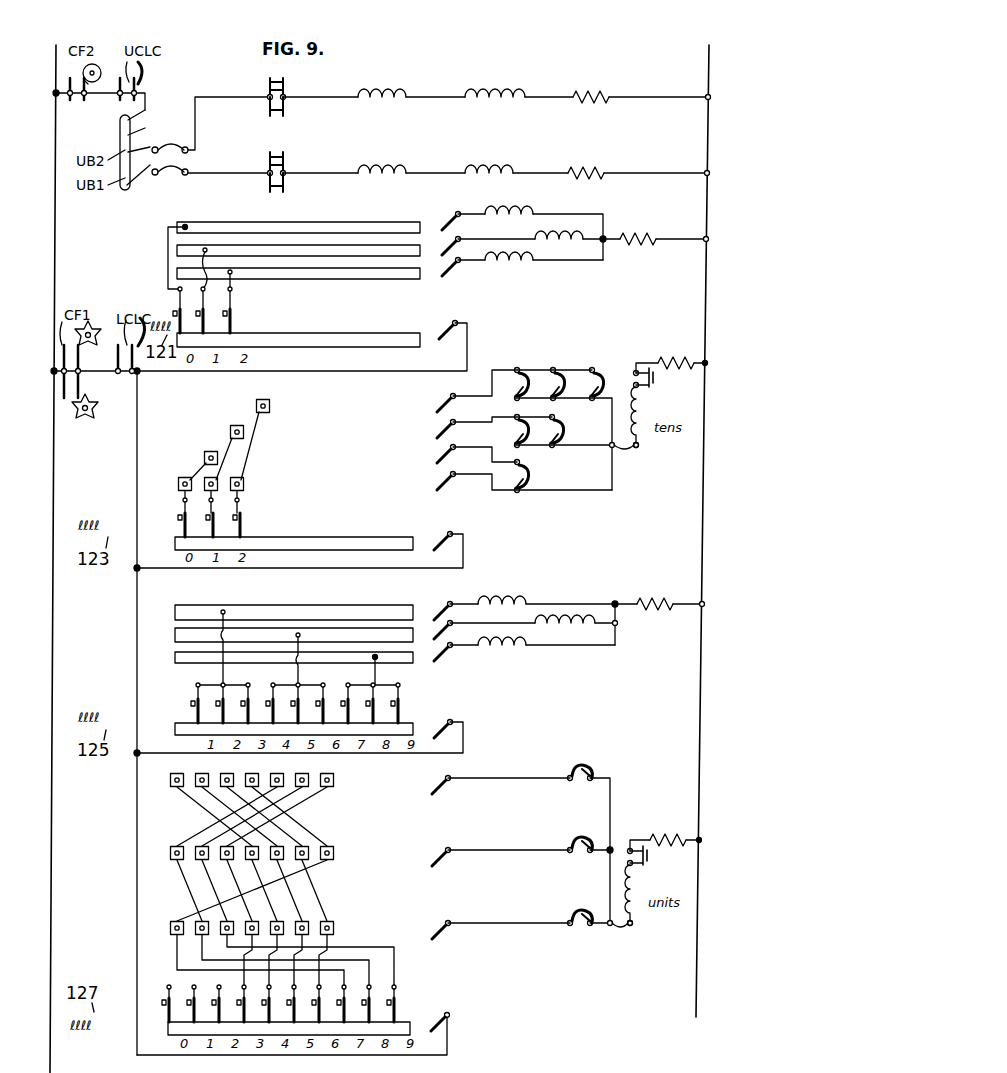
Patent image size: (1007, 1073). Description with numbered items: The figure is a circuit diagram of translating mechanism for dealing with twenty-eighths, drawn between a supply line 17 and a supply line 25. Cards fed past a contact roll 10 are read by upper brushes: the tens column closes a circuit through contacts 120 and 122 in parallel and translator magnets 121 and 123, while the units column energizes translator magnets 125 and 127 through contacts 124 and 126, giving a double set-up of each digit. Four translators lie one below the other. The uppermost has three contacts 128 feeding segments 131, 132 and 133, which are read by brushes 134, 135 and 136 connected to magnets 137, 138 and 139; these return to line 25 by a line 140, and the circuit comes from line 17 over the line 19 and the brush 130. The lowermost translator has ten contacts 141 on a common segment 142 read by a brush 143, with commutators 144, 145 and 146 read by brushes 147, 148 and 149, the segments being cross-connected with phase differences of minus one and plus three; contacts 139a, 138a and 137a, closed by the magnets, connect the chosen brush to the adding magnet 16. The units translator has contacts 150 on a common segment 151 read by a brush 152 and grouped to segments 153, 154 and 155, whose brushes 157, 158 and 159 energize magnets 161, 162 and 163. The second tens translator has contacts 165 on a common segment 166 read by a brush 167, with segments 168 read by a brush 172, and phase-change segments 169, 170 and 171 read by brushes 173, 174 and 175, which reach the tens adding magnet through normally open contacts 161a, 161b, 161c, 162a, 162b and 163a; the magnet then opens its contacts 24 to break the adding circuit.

The contact roll 10 is at (120, 130).
The adding magnet 16 is at (643, 437).
The supply line 17 is at (55, 232).
The line 19 is at (338, 371).
The contacts 24 is at (653, 383).
The supply line 25 is at (706, 280).
The contacts 120 is at (283, 80).
The translator magnet 121 is at (386, 92).
The contacts 122 is at (284, 116).
The translator magnet 123 is at (516, 92).
The contacts 124 is at (283, 154).
The translator magnet 125 is at (386, 168).
The contacts 126 is at (284, 190).
The translator magnet 127 is at (508, 168).
The contacts 128 is at (242, 317).
The brush 130 is at (467, 322).
The segment 131 is at (177, 273).
The segment 132 is at (177, 250).
The segment 133 is at (177, 226).
The brush 134 is at (458, 262).
The brush 135 is at (458, 241).
The brush 136 is at (458, 216).
The magnet 137 is at (528, 262).
The magnet 138 is at (561, 238).
The magnet 139 is at (519, 215).
The line 140 is at (631, 236).
The contacts 141 is at (168, 1000).
The common segment 142 is at (168, 1029).
The brush 143 is at (450, 1018).
The commutator 144 is at (170, 925).
The commutator 145 is at (170, 850).
The commutator 146 is at (170, 781).
The brush 147 is at (449, 926).
The brush 148 is at (449, 853).
The brush 149 is at (449, 781).
The contacts 150 is at (190, 707).
The common segment 151 is at (175, 730).
The brush 152 is at (452, 723).
The segment 153 is at (175, 657).
The segment 154 is at (175, 634).
The segment 155 is at (175, 608).
The brush 157 is at (451, 648).
The brush 158 is at (451, 626).
The brush 159 is at (450, 603).
The relay magnet 161 is at (525, 652).
The magnet 162 is at (580, 618).
The magnet 163 is at (516, 605).
The contacts 161a is at (520, 494).
The contacts 161b is at (514, 452).
The contacts 161c is at (515, 369).
The contacts 162a is at (563, 433).
The contacts 162b is at (552, 369).
The contacts 163a is at (600, 364).
The contacts 137a is at (578, 853).
The contacts 138a is at (578, 781).
The contacts 139a is at (578, 927).
The contacts 165 is at (178, 528).
The common segment 166 is at (175, 547).
The brush 167 is at (453, 535).
The segment 168 is at (178, 484).
The segment 169 is at (204, 458).
The segment 170 is at (230, 432).
The segment 171 is at (255, 405).
The brush 172 is at (456, 476).
The brush 173 is at (456, 449).
The brush 174 is at (456, 424).
The brush 175 is at (456, 398).